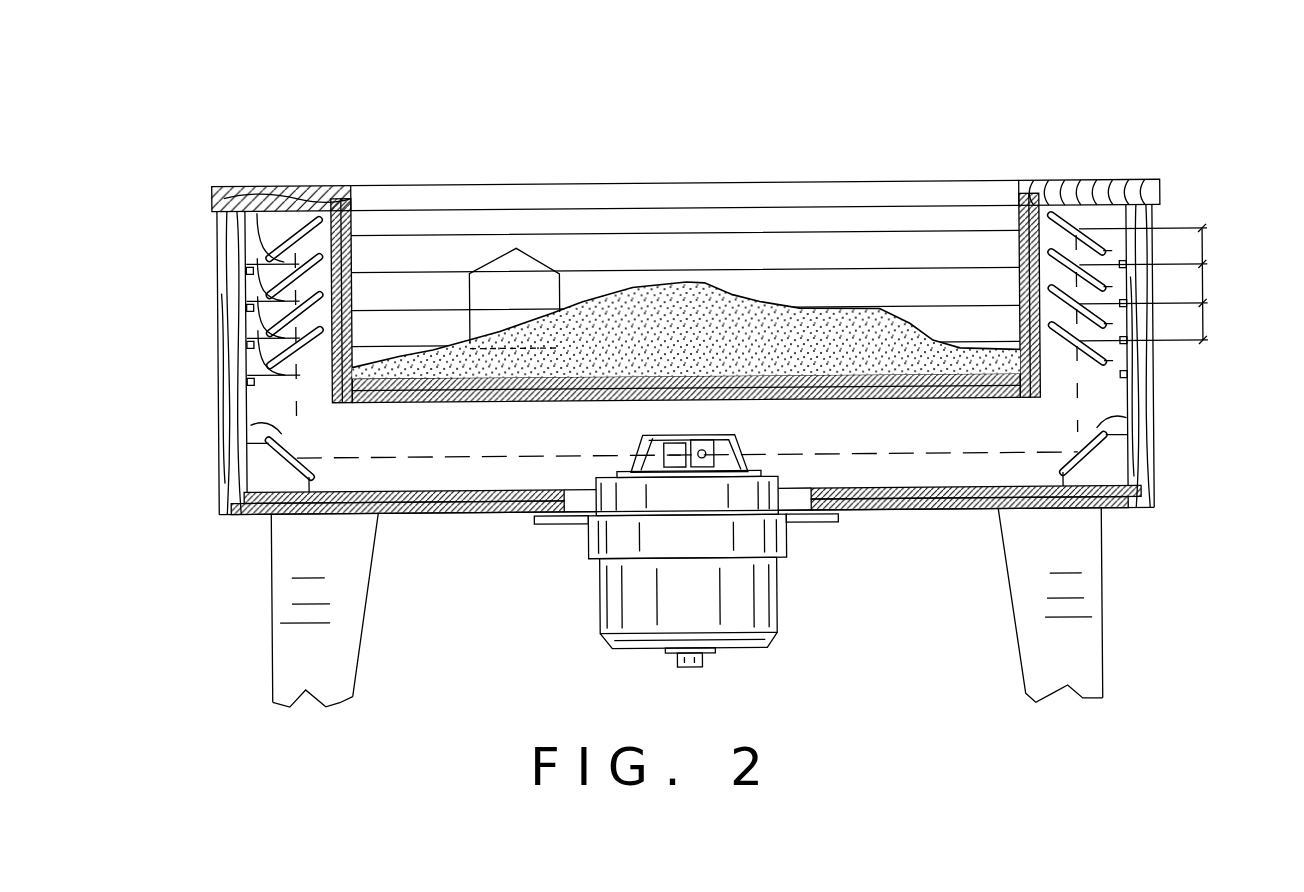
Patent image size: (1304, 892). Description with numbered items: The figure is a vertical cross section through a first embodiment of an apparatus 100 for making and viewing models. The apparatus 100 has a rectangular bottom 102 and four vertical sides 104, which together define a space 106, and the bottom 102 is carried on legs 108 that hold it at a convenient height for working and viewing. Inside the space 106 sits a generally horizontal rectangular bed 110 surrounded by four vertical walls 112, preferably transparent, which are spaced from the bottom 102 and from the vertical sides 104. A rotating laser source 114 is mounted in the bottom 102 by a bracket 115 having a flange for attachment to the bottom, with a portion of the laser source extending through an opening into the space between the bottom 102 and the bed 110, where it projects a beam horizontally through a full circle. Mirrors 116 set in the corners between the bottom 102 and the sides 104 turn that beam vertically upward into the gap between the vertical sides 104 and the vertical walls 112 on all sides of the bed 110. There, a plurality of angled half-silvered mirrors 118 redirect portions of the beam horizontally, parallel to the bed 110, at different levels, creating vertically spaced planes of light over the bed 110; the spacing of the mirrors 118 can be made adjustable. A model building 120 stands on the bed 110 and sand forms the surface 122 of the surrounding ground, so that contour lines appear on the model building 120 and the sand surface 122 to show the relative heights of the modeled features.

The apparatus 100 is at (145, 252).
The rectangular bottom 102 is at (466, 490).
The vertical sides 104 is at (232, 365).
The space 106 is at (1094, 394).
The legs 108 is at (310, 604).
The bed 110 is at (780, 404).
The vertical walls 112 is at (1018, 243).
The rotating laser source 114 is at (617, 601).
The bracket 115 is at (587, 534).
The mirrors 116 is at (260, 418).
The half-silvered mirrors 118 is at (258, 210).
The model building 120 is at (522, 262).
The surface 122 is at (897, 322).